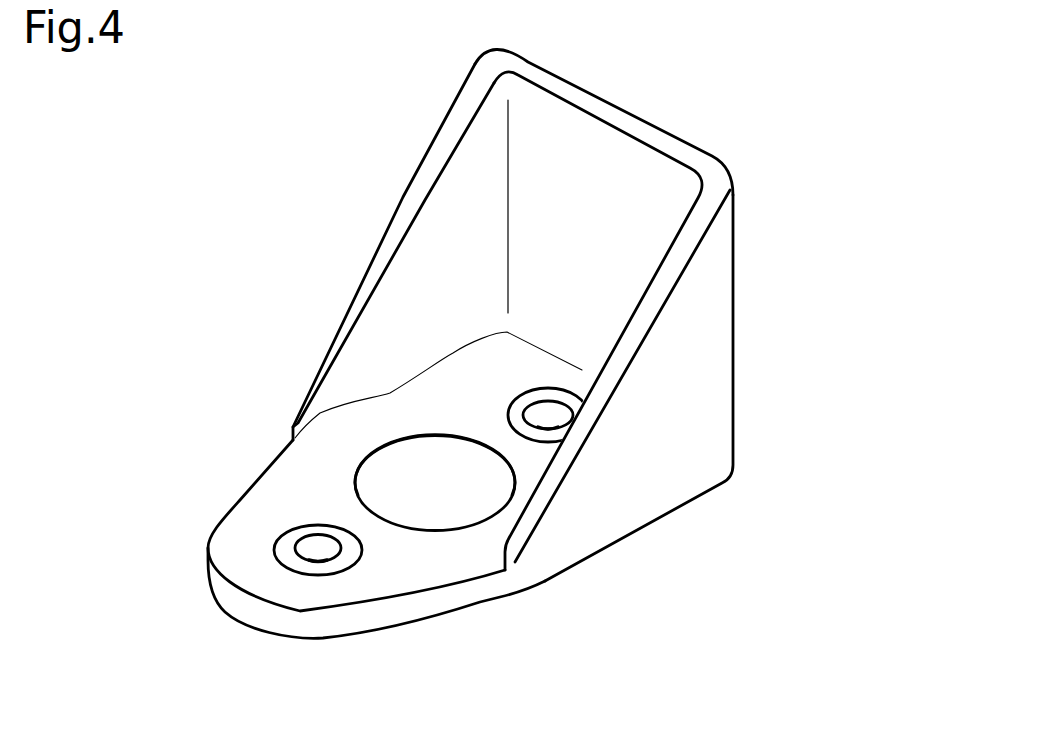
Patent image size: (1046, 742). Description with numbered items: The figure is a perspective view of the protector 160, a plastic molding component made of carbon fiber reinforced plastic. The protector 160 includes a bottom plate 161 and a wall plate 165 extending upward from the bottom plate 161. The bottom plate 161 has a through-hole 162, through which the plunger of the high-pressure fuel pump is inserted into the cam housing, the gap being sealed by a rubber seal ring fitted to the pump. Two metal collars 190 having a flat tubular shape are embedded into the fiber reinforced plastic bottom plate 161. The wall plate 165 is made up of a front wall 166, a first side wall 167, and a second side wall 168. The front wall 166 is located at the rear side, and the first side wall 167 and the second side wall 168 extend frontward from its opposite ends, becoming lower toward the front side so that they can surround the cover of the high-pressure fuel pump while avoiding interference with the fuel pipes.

The protector 160 is at (288, 119).
The bottom plate 161 is at (243, 521).
The through-hole 162 is at (441, 452).
The wall plate 165 is at (645, 128).
The front wall 166 is at (575, 138).
The first side wall 167 is at (658, 437).
The second side wall 168 is at (413, 196).
The metal collars 190 is at (317, 528).